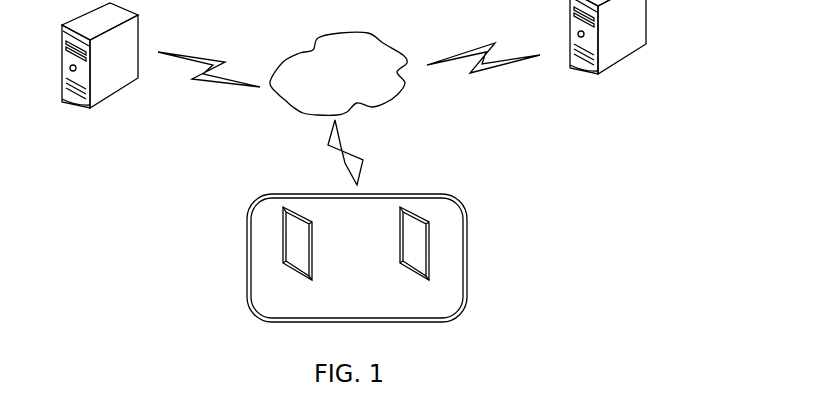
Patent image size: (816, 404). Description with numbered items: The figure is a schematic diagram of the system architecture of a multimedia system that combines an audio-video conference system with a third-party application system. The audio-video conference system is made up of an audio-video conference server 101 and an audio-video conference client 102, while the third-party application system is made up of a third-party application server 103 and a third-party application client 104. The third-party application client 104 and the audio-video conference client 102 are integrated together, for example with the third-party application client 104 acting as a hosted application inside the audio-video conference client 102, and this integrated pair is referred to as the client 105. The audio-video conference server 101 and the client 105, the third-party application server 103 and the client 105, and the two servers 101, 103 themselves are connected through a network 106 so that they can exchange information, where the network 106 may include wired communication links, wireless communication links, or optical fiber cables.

The audio-video conference server 101 is at (608, 56).
The audio-video conference client 102 is at (417, 260).
The third-party application server 103 is at (100, 74).
The third-party application client 104 is at (296, 260).
The client 105 is at (465, 253).
The network 106 is at (338, 64).